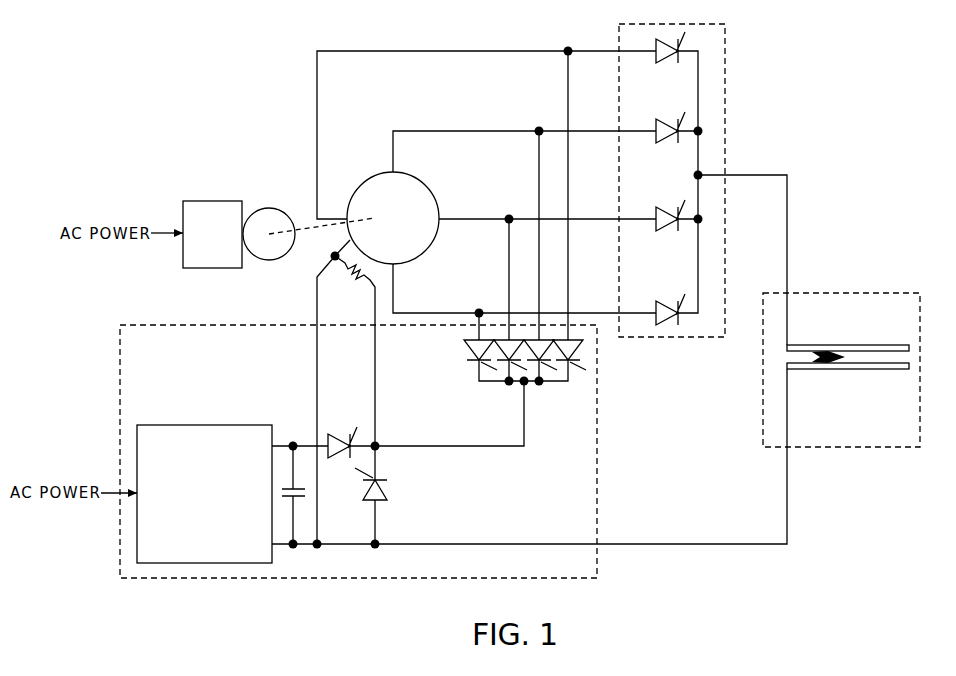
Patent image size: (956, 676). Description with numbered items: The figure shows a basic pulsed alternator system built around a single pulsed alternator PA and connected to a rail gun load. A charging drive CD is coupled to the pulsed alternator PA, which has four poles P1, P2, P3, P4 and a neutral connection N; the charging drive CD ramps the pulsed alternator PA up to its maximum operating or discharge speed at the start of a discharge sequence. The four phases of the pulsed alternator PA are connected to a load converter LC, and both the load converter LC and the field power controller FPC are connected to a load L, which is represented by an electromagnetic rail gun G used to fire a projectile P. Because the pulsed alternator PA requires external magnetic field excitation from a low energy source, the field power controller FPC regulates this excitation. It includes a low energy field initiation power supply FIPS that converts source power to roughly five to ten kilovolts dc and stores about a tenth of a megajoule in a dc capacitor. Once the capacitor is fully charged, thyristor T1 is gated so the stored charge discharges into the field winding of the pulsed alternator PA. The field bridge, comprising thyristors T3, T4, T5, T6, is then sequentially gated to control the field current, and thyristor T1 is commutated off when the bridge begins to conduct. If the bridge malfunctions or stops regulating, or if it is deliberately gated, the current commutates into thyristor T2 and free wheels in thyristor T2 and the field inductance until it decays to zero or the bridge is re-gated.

The charging drive CD is at (213, 201).
The pulsed alternator PA is at (354, 218).
The pole P1 is at (486, 133).
The pole P2 is at (513, 150).
The pole P3 is at (547, 211).
The pole P4 is at (524, 291).
The neutral terminal N is at (346, 386).
The field power controller FPC is at (358, 451).
The field initiation power supply FIPS is at (204, 494).
The thyristor T1 is at (342, 434).
The thyristor T2 is at (382, 495).
The thyristor T3 is at (480, 355).
The thyristor T4 is at (510, 355).
The thyristor T5 is at (540, 355).
The thyristor T6 is at (492, 373).
The load converter LC is at (672, 191).
The load L is at (841, 361).
The electromagnetic rail gun G is at (848, 347).
The projectile P is at (829, 365).